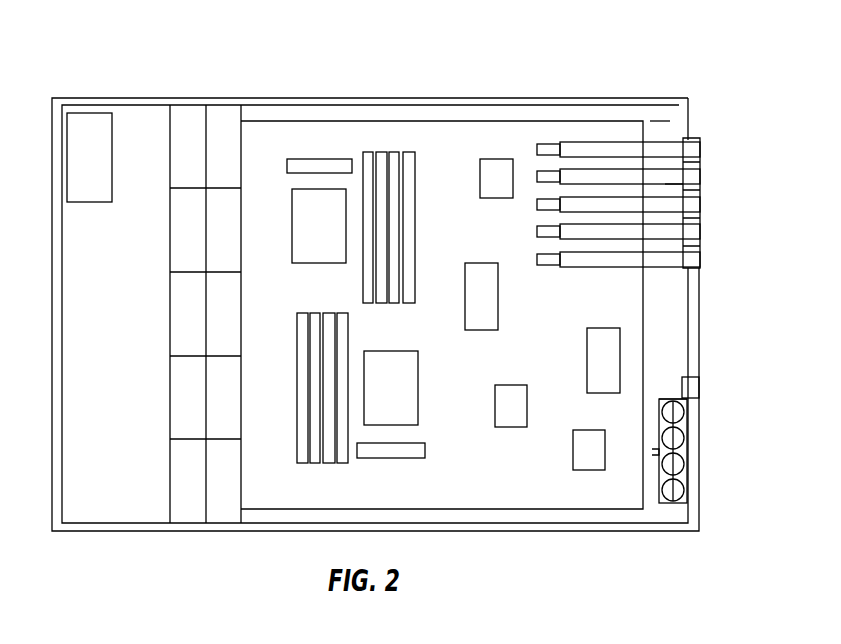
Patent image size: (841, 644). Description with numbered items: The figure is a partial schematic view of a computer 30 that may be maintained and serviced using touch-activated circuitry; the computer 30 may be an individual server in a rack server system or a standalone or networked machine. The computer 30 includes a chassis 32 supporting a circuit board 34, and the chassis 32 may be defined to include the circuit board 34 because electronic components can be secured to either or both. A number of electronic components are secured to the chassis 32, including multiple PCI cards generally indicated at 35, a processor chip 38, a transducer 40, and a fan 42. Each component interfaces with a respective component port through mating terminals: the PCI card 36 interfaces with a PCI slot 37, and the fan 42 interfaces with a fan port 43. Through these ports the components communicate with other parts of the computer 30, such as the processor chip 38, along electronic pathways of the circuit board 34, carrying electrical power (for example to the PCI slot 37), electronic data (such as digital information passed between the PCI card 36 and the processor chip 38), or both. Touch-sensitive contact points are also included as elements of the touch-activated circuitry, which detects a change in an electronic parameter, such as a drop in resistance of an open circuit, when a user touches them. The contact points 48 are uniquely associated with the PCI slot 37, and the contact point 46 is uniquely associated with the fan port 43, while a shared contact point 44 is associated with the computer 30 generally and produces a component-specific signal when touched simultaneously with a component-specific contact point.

The computer 30 is at (548, 58).
The chassis 32 is at (298, 95).
The circuit board 34 is at (447, 142).
The PCI cards 35 is at (661, 125).
The PCI card 36 is at (671, 165).
The PCI slot 37 is at (673, 187).
The processor chip 38 is at (310, 255).
The transducer 40 is at (308, 162).
The fan 42 is at (668, 505).
The fan port 43 is at (673, 390).
The shared contact point 44 is at (67, 160).
The contact point 46 is at (700, 396).
The contact points 48 is at (702, 148).